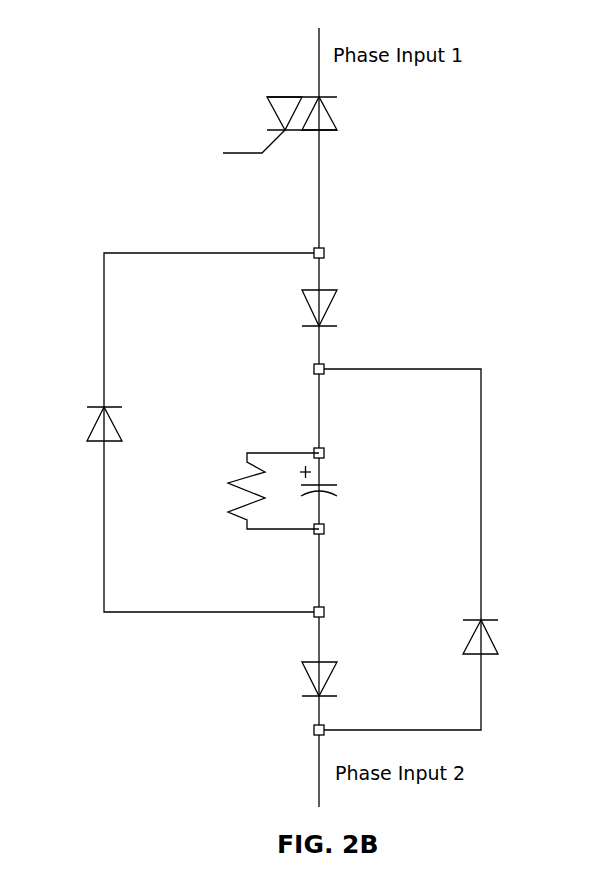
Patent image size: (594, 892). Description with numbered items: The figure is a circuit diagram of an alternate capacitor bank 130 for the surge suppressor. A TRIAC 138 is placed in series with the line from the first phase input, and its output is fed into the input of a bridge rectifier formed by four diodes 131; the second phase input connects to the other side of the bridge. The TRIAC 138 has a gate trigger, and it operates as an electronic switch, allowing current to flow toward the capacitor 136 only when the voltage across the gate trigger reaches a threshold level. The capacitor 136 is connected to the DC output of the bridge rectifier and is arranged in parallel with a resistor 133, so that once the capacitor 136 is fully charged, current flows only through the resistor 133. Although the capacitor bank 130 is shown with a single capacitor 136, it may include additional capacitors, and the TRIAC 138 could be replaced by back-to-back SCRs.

The capacitor bank 130 is at (146, 91).
The TRIAC 138 is at (333, 120).
The diodes 131 is at (333, 301).
The resistor 133 is at (228, 483).
The capacitor 136 is at (331, 483).